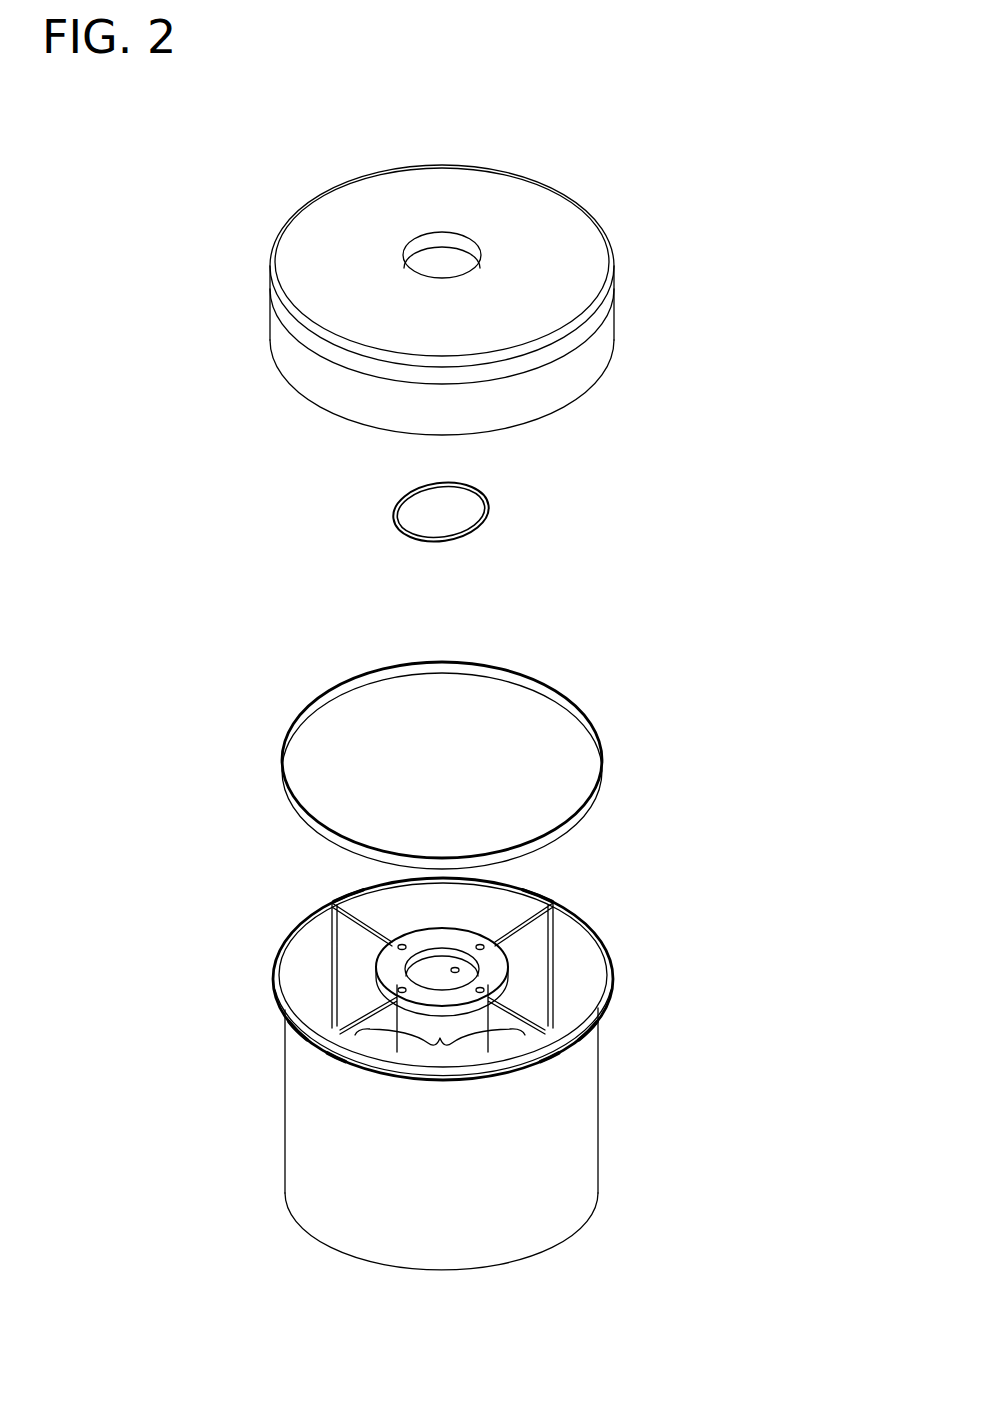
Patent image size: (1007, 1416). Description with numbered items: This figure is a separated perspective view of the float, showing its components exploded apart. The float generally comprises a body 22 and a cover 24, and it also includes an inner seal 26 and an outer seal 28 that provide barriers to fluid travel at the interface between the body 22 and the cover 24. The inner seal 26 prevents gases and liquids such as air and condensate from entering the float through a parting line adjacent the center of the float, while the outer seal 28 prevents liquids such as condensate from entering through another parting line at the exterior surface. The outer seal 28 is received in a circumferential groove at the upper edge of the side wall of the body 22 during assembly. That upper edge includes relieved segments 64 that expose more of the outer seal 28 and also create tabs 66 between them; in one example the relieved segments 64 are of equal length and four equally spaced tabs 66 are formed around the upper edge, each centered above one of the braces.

The body 22 is at (628, 1106).
The cover 24 is at (632, 297).
The inner seal 26 is at (489, 506).
The outer seal 28 is at (586, 715).
The relieved segments 64 is at (442, 985).
The tabs 66 is at (312, 917).